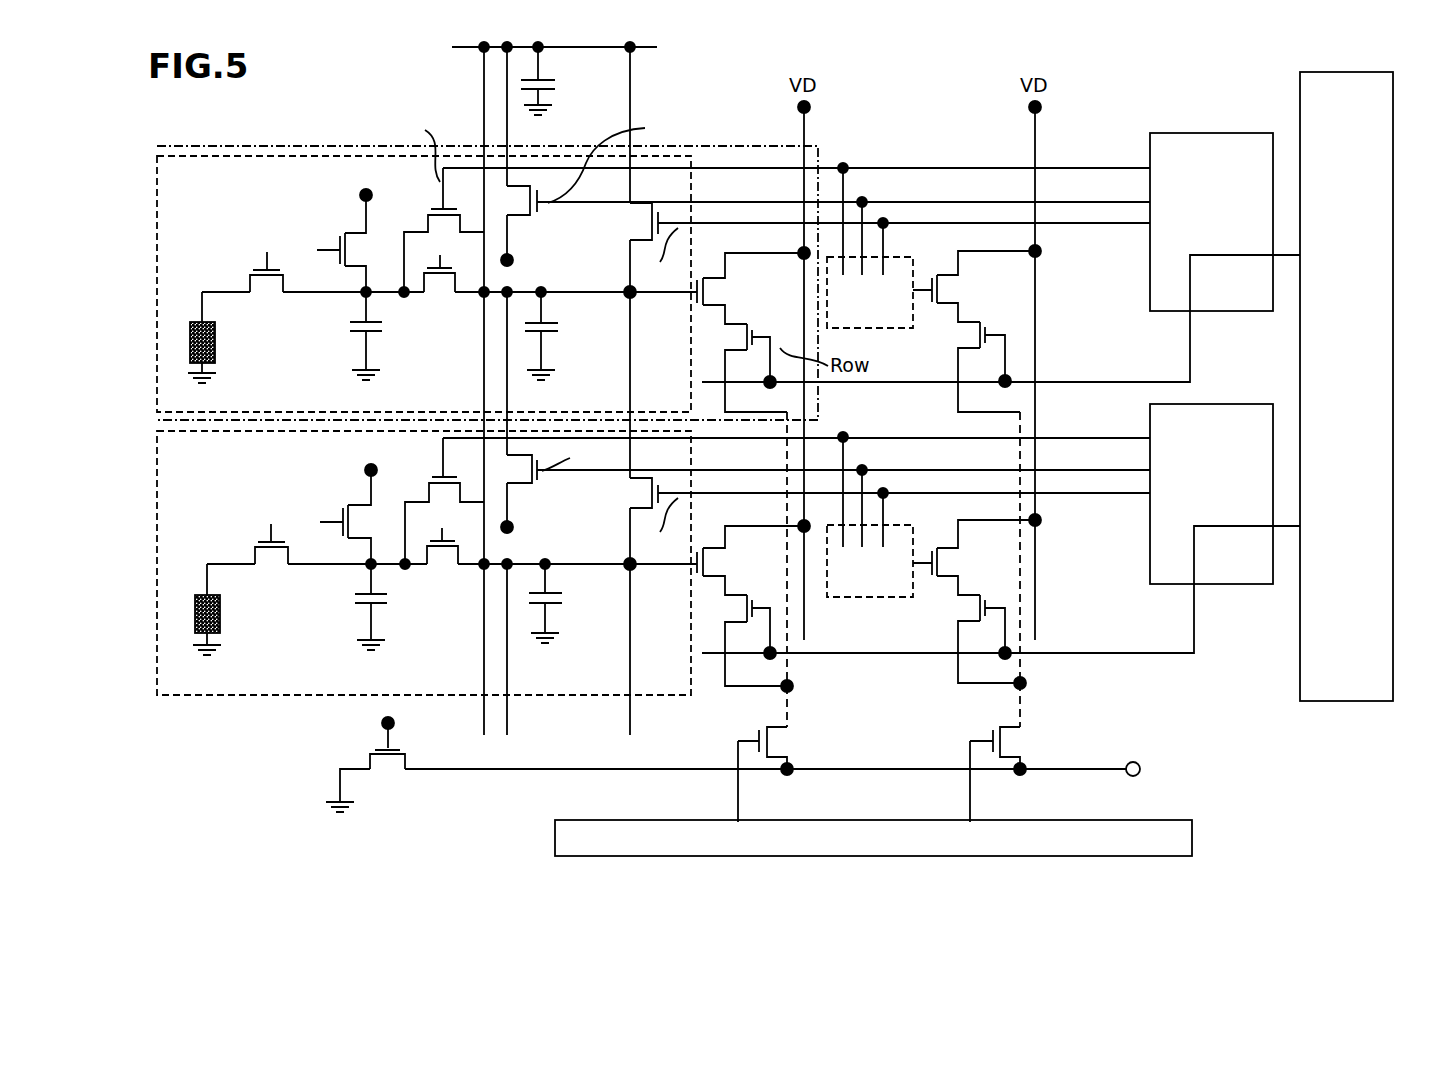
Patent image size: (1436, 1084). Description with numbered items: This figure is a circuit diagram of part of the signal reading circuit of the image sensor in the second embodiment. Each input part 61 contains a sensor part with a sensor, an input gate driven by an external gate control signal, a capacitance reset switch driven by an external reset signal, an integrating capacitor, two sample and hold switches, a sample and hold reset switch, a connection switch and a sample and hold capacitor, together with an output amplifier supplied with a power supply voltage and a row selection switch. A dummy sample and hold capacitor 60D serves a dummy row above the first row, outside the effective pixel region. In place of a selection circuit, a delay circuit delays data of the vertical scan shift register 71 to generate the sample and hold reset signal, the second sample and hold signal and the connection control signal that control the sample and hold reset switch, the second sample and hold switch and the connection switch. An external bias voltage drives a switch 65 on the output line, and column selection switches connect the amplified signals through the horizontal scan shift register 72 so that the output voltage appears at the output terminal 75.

The dummy sample and hold capacitor 60D is at (557, 86).
The input part 61 is at (198, 146).
The switch 65 is at (386, 762).
The vertical scan shift register 71 is at (1350, 701).
The horizontal scan shift register 72 is at (1194, 838).
The output terminal 75 is at (1133, 761).